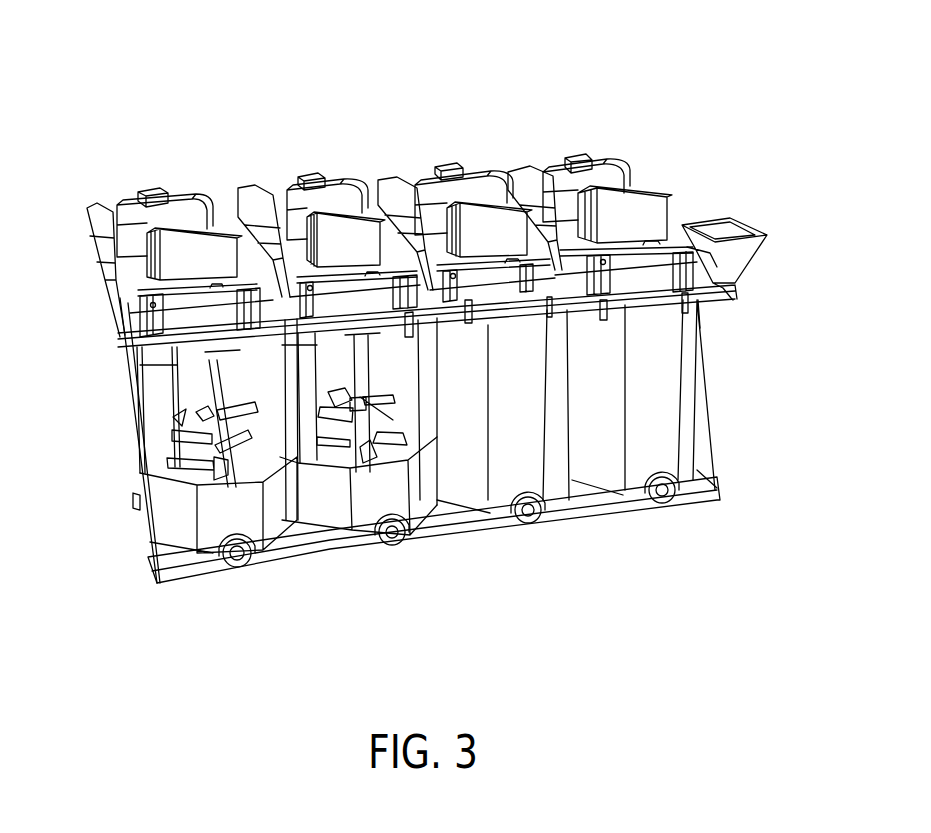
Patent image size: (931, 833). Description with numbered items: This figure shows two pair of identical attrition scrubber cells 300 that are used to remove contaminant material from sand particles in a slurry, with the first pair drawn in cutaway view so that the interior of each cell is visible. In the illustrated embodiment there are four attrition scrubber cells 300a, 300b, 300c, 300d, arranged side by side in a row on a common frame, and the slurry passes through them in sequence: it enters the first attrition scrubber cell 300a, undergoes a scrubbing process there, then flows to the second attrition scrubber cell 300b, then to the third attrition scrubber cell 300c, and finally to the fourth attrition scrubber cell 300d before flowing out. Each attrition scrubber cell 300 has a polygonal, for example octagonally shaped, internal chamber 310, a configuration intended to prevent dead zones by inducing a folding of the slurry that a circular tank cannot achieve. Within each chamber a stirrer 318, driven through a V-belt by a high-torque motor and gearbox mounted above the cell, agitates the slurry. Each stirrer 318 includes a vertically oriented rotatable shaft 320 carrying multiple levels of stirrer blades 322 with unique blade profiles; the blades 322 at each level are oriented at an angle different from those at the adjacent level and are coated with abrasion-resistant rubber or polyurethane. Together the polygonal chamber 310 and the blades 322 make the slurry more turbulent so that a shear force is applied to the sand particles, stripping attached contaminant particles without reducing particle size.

The attrition scrubber cell 300 is at (612, 102).
The first attrition scrubber cell 300a is at (174, 522).
The second attrition scrubber cell 300b is at (337, 511).
The third attrition scrubber cell 300c is at (557, 481).
The fourth attrition scrubber cell 300d is at (687, 447).
The internal chamber 310 is at (410, 400).
The stirrer 318 is at (229, 396).
The rotatable shaft 320 is at (213, 382).
The stirrer blades 322 is at (386, 398).